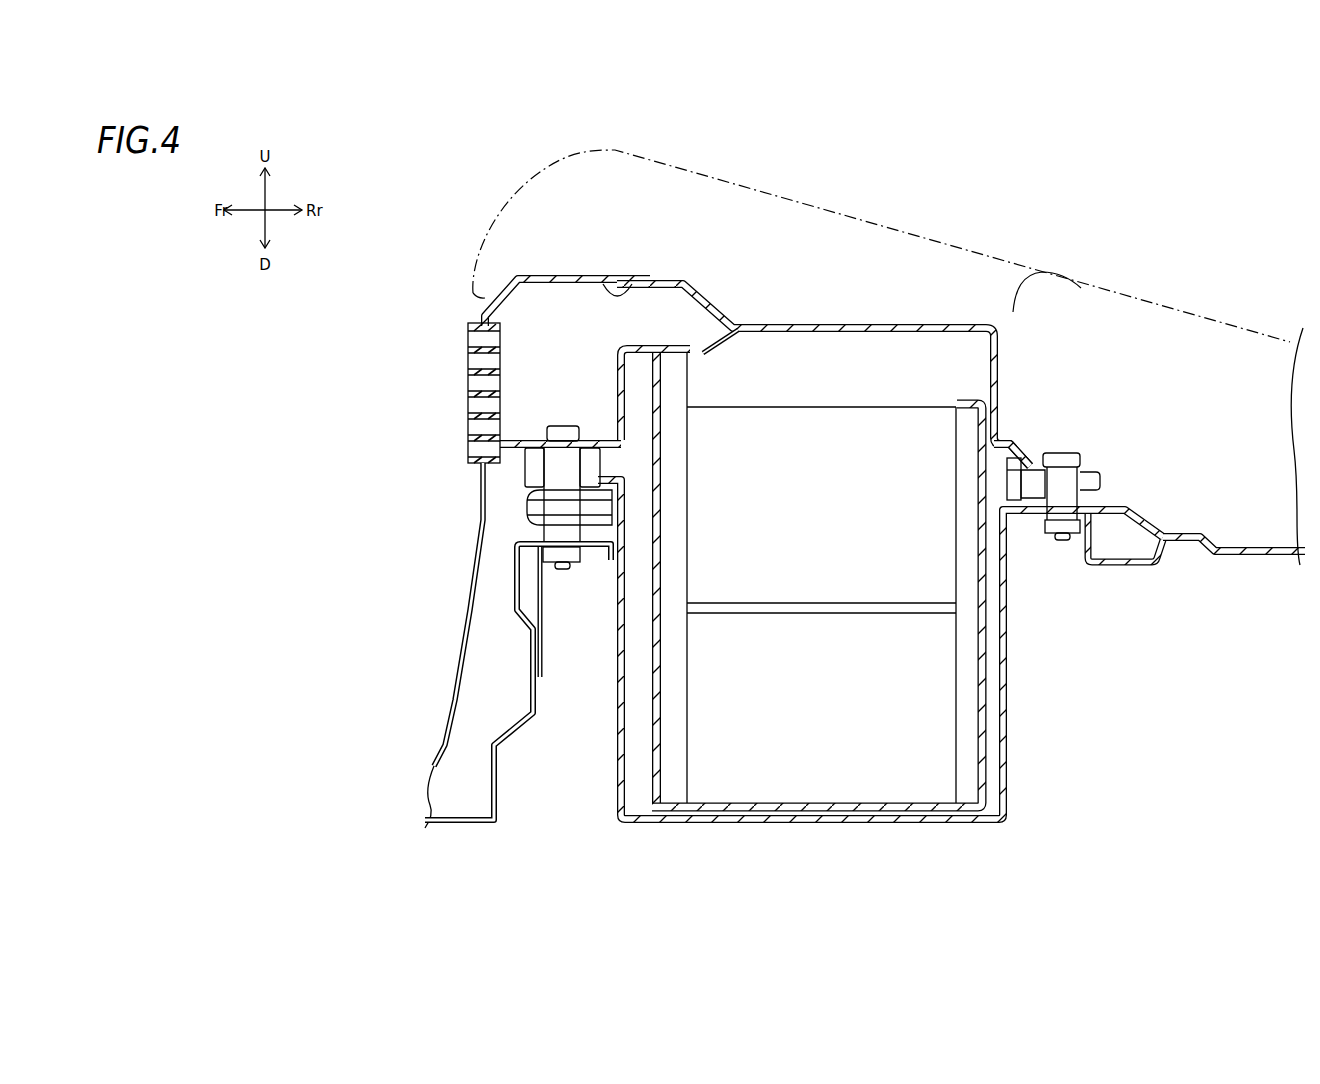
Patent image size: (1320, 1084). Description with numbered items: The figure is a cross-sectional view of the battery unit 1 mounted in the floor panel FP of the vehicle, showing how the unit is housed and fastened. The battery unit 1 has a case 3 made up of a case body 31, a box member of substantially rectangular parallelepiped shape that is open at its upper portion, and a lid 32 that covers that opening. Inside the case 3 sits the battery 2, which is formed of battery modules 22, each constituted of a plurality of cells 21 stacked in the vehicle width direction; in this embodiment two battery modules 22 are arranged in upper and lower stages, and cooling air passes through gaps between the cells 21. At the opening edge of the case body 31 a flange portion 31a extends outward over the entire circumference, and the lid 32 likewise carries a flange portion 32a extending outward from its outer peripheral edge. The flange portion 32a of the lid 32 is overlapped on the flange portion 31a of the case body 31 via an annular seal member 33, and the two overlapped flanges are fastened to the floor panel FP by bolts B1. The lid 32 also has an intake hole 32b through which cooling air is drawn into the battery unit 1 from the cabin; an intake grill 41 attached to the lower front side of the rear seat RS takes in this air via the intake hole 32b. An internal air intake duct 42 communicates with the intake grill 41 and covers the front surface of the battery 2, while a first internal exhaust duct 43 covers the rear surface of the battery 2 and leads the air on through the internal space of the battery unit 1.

The battery unit 1 is at (848, 521).
The case 3 is at (848, 521).
The battery 2 is at (821, 641).
The cells 21 is at (860, 889).
The battery module 22 is at (821, 622).
The case body 31 is at (1003, 750).
The flange portion 31a is at (607, 547).
The lid 32 is at (859, 322).
The flange portion 32a is at (537, 440).
The intake hole 32b is at (600, 297).
The seal member 33 is at (595, 455).
The intake grill 41 is at (467, 356).
The internal air intake duct 42 is at (662, 723).
The first internal exhaust duct 43 is at (967, 677).
The bolts B1 is at (563, 424).
The rear seat RS is at (758, 191).
The floor panel FP is at (1175, 527).